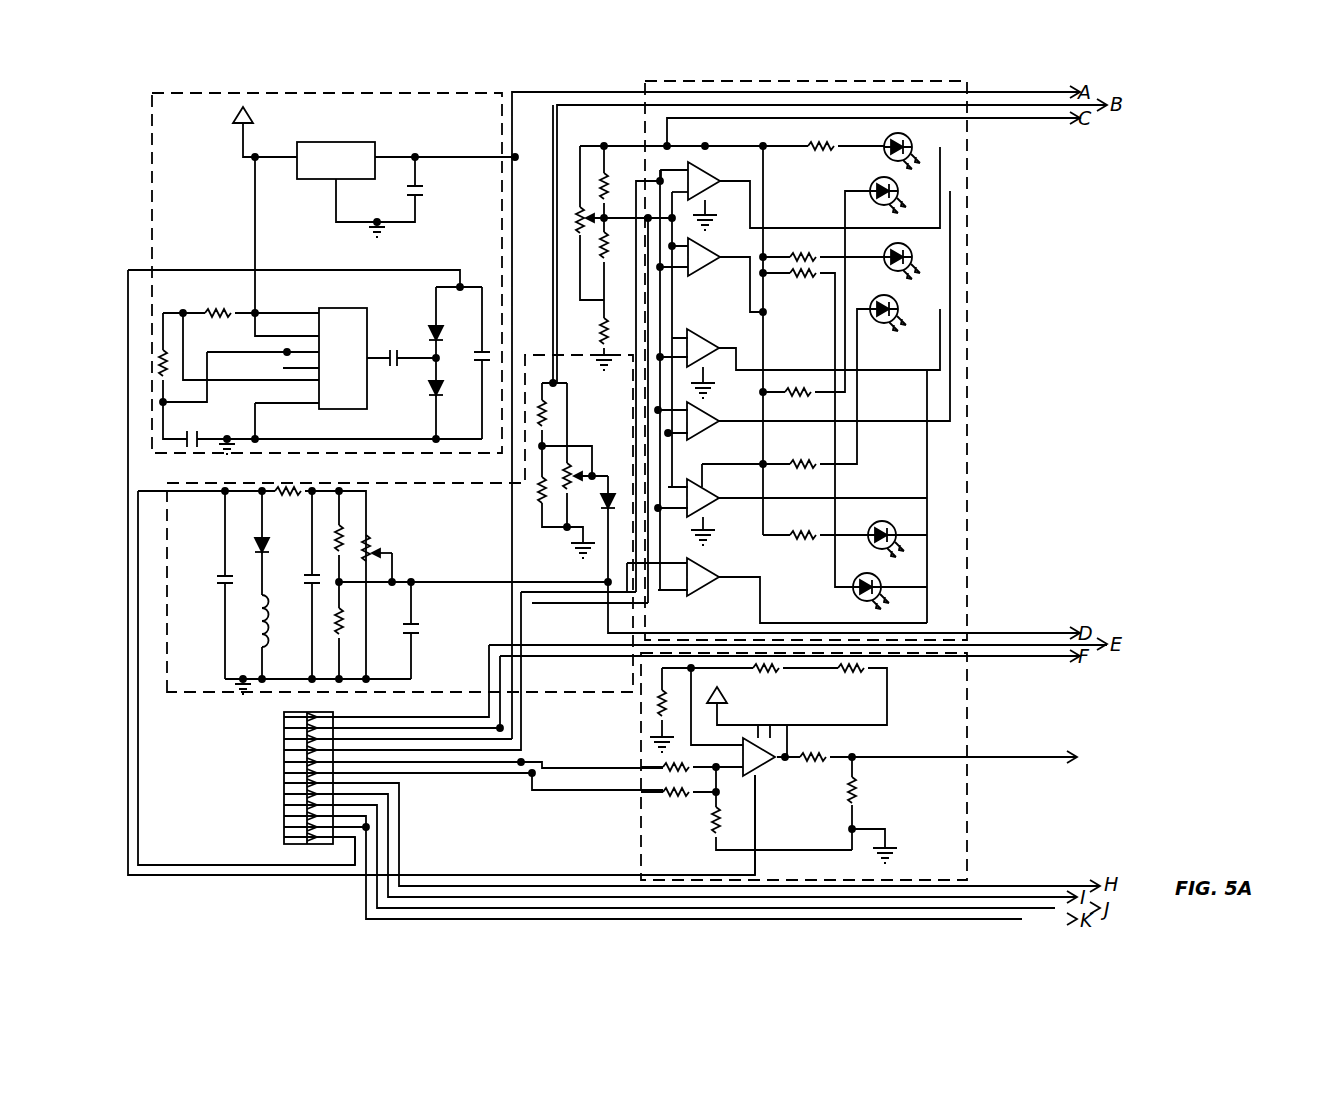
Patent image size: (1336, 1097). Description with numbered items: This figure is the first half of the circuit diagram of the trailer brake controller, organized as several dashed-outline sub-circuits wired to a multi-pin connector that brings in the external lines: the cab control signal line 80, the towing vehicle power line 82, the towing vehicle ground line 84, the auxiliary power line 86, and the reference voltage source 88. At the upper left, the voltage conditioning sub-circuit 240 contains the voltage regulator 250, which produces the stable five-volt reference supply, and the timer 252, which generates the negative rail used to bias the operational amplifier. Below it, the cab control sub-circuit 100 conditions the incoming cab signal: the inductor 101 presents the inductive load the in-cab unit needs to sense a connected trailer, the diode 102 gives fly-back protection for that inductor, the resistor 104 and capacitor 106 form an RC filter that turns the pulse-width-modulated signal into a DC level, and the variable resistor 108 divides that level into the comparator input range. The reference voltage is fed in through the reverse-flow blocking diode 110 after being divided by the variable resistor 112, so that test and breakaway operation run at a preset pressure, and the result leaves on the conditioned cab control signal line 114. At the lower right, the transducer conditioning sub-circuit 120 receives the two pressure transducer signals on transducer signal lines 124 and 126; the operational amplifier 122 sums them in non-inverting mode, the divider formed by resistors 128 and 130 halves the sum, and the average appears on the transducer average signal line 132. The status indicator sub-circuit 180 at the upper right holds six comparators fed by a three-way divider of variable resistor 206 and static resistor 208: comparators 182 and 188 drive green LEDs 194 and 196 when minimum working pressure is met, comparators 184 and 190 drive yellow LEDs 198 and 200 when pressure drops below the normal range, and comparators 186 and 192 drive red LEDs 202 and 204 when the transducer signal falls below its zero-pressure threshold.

The cab control signal line 80 is at (205, 863).
The towing vehicle power line 82 is at (448, 717).
The towing vehicle ground line 84 is at (498, 672).
The auxiliary power line 86 is at (366, 827).
The reference voltage source 88 is at (447, 752).
The cab control sub-circuit 100 is at (192, 694).
The inductor 101 is at (256, 617).
The diode 102 is at (256, 542).
The resistor 104 is at (289, 493).
The capacitor 106 is at (316, 569).
The variable resistor 108 is at (376, 552).
The reverse-flow blocking diode 110 is at (614, 487).
The variable resistor 112 is at (566, 466).
The conditioned cab control signal line 114 is at (608, 582).
The transducer conditioning sub-circuit 120 is at (640, 826).
The operational amplifier 122 is at (768, 770).
The transducer signal line 124 is at (524, 758).
The transducer signal line 126 is at (534, 770).
The resistor 128 is at (840, 668).
The resistor 130 is at (852, 800).
The transducer average signal line 132 is at (988, 757).
The status indicator sub-circuit 180 is at (975, 355).
The voltage comparator 182 is at (722, 182).
The voltage comparator 184 is at (726, 262).
The voltage comparator 186 is at (718, 344).
The voltage comparator 188 is at (704, 438).
The voltage comparator 190 is at (714, 516).
The voltage comparator 192 is at (694, 590).
The green LED 194 is at (910, 131).
The green LED 196 is at (898, 185).
The yellow LED 198 is at (908, 248).
The yellow LED 200 is at (895, 304).
The red LED 202 is at (897, 528).
The red LED 204 is at (882, 582).
The variable resistor 206 is at (592, 210).
The static resistor 208 is at (600, 330).
The voltage conditioning sub-circuit 240 is at (152, 142).
The voltage regulator 250 is at (360, 144).
The timer 252 is at (360, 310).